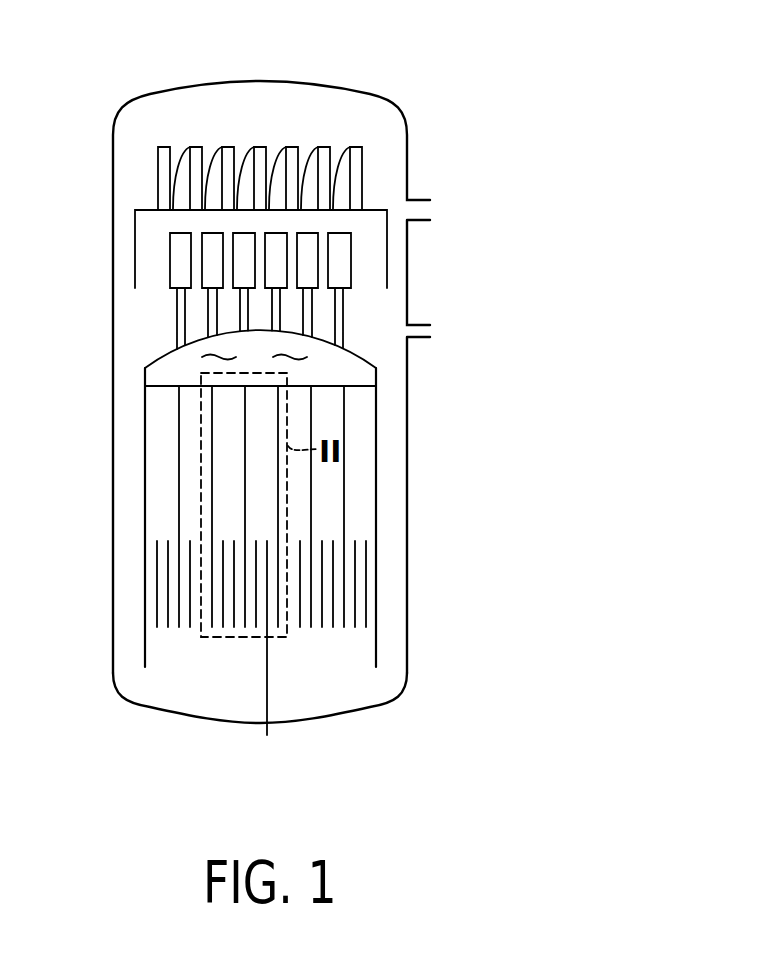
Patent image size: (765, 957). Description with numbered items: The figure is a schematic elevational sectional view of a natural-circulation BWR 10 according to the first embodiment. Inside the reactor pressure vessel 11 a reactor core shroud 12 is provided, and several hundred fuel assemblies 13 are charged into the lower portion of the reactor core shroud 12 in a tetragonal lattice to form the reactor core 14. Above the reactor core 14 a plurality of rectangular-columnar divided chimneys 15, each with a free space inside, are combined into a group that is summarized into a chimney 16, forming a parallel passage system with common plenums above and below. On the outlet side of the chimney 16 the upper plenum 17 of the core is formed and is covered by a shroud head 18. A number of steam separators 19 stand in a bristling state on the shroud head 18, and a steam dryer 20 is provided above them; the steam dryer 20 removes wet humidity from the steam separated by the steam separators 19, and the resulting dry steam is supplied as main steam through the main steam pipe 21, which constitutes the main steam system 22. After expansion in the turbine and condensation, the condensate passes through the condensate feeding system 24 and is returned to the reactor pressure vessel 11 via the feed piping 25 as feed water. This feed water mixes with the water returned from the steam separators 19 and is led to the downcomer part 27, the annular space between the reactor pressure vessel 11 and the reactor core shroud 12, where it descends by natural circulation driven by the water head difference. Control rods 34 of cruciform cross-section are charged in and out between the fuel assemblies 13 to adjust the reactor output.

The natural-circulation BWR 10 is at (381, 43).
The reactor pressure vessel 11 is at (294, 402).
The reactor core shroud 12 is at (212, 517).
The fuel assemblies 13 is at (316, 584).
The reactor core 14 is at (167, 505).
The divided chimneys 15 is at (196, 506).
The chimney 16 is at (212, 410).
The upper plenum 17 is at (254, 354).
The shroud head 18 is at (212, 339).
The steam separators 19 is at (217, 279).
The steam dryer 20 is at (205, 178).
The main steam pipe 21 is at (441, 233).
The main steam system 22 is at (457, 181).
The condensate feeding system 24 is at (457, 306).
The feed piping 25 is at (441, 351).
The downcomer part 27 is at (433, 521).
The control rods 34 is at (237, 655).